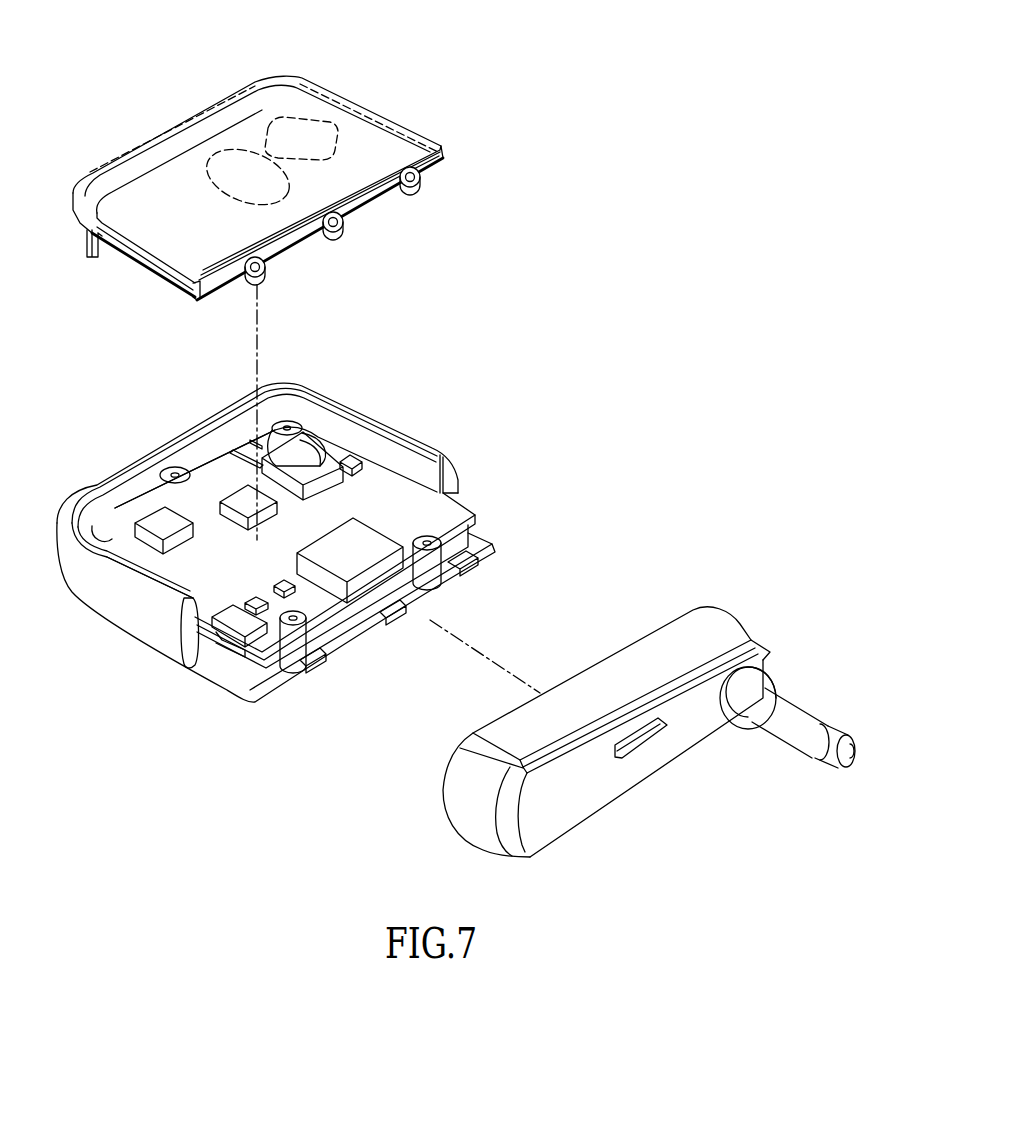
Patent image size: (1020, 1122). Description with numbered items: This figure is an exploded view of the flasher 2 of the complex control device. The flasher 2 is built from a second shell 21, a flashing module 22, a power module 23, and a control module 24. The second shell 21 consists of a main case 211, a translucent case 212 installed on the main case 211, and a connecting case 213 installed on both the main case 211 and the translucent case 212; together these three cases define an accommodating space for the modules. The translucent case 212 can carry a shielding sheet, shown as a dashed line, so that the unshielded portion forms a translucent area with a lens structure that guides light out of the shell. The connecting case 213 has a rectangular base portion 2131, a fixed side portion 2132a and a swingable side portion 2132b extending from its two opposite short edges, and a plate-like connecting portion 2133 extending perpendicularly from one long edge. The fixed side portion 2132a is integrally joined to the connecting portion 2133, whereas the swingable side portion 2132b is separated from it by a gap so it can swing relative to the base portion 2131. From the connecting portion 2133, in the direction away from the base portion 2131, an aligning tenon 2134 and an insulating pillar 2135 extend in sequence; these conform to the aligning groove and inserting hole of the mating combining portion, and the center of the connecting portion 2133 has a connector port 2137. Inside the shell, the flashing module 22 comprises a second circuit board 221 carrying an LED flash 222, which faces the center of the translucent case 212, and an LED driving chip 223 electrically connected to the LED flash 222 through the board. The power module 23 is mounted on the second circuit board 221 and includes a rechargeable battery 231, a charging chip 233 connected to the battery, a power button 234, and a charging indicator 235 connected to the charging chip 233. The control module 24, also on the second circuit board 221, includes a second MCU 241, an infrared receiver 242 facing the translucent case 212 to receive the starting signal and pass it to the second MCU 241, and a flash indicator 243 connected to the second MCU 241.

The flasher 2 is at (751, 43).
The second shell 21 is at (160, 47).
The main case 211 is at (458, 453).
The translucent case 212 is at (168, 116).
The connecting case 213 is at (635, 628).
The base portion 2131 is at (590, 687).
The fixed side portion 2132a is at (737, 636).
The swingable side portion 2132b is at (458, 800).
The connecting portion 2133 is at (580, 800).
The aligning tenon 2134 is at (737, 717).
The insulating pillar 2135 is at (784, 709).
The connector port 2137 is at (637, 740).
The flashing module 22 is at (70, 375).
The second circuit board 221 is at (120, 530).
The LED flash 222 is at (243, 500).
The LED driving chip 223 is at (157, 522).
The power module 23 is at (362, 750).
The rechargeable battery 231 is at (217, 653).
The charging chip 233 is at (353, 588).
The power button 234 is at (243, 627).
The charging indicator 235 is at (260, 612).
The control module 24 is at (437, 338).
The second MCU 241 is at (345, 460).
The infrared receiver 242 is at (288, 425).
The flash indicator 243 is at (285, 581).